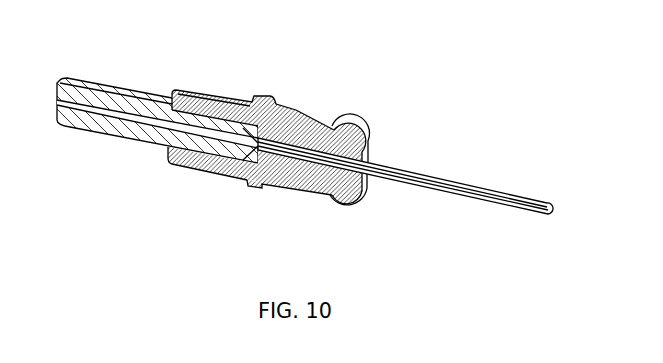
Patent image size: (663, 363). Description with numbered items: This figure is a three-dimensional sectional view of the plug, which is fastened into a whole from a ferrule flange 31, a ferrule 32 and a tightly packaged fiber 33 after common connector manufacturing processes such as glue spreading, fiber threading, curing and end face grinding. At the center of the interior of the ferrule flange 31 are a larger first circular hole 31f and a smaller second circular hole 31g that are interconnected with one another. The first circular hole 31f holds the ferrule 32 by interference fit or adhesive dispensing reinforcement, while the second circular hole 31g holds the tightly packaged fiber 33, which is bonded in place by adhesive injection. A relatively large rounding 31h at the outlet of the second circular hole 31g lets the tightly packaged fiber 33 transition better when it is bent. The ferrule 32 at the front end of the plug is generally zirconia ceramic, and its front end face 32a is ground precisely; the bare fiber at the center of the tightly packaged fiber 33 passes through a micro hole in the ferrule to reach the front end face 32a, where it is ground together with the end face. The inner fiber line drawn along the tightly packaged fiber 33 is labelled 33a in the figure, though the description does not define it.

The ferrule flange 31 is at (203, 97).
The first circular hole 31f is at (205, 165).
The second circular hole 31g is at (303, 165).
The rounding 31h is at (370, 148).
The ferrule 32 is at (110, 86).
The front end face 32a is at (56, 89).
The tightly packaged fiber 33 is at (483, 185).
The needle lumen 33a is at (463, 195).